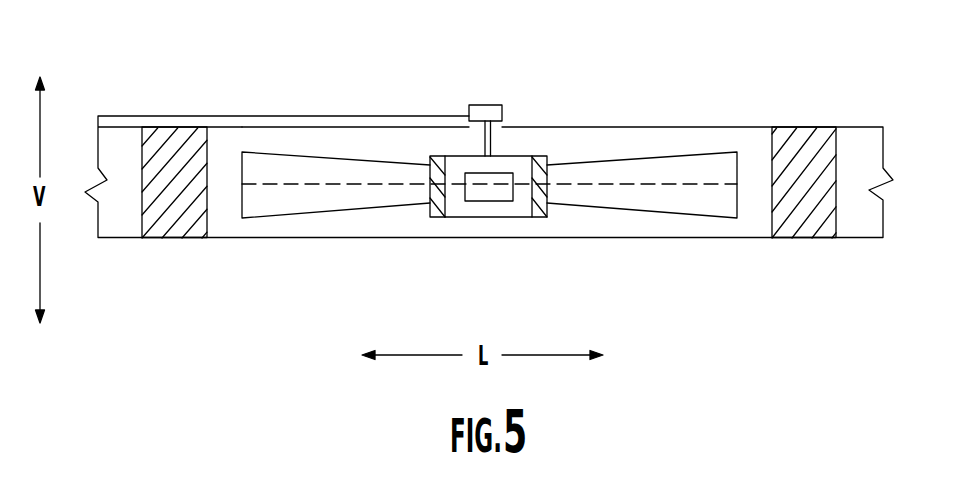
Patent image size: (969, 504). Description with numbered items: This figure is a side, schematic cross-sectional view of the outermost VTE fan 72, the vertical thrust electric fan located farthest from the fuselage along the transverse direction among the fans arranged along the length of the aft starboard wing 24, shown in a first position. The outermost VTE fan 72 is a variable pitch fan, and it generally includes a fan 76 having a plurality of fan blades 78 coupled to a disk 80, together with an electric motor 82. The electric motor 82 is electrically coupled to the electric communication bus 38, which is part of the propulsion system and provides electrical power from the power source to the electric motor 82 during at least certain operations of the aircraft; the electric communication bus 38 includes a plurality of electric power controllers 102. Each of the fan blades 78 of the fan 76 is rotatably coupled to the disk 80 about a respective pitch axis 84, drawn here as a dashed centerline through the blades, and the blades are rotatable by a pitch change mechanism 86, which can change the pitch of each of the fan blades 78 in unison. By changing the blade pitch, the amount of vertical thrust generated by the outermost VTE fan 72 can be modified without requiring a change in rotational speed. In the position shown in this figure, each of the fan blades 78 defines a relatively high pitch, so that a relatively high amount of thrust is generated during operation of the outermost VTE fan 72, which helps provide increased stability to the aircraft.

The aft starboard wing 24 is at (792, 157).
The electric communication bus 38 is at (454, 76).
The outermost VTE fan 72 is at (629, 64).
The fan 76 is at (664, 109).
The fan blades 78 is at (657, 203).
The disk 80 is at (538, 200).
The electric motor 82 is at (462, 217).
The pitch axis 84 is at (300, 182).
The pitch change mechanism 86 is at (495, 193).
The electric power controller 102 is at (493, 105).